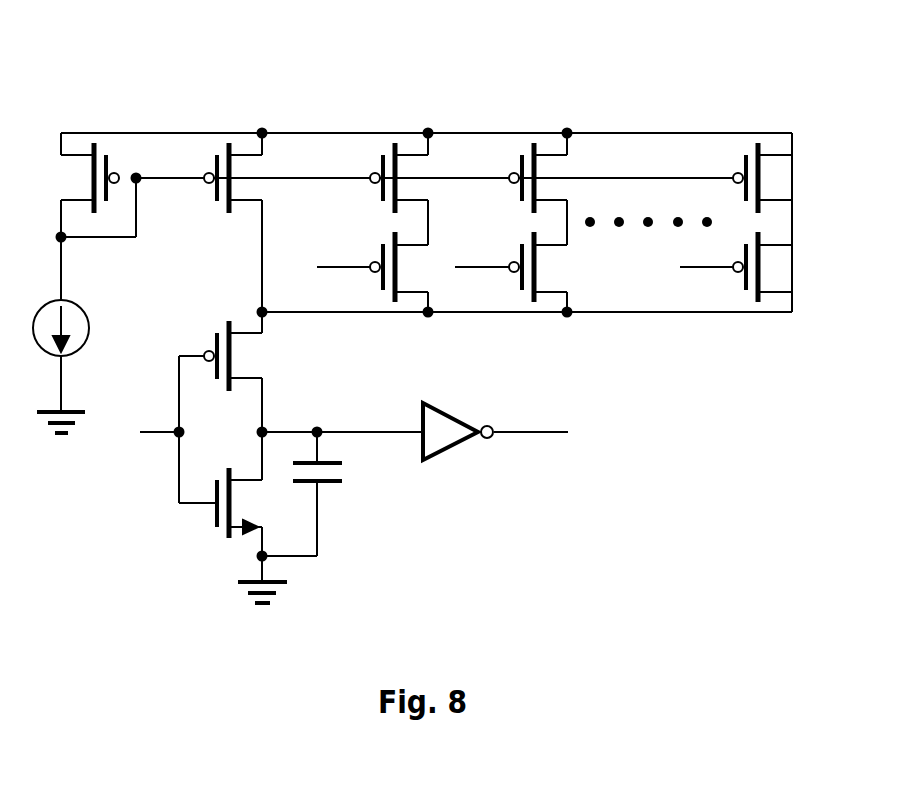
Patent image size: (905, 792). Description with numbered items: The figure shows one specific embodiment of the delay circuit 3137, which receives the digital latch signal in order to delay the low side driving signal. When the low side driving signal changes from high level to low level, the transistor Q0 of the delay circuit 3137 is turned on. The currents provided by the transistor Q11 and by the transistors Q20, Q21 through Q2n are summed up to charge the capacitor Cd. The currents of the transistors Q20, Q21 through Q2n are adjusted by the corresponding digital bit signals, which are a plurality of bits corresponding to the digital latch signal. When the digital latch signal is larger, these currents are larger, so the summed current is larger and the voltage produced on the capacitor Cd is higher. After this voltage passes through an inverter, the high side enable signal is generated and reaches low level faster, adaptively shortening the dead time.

The delay circuit 3137 is at (768, 51).
The transistor Q11 is at (233, 233).
The transistor Q20 is at (357, 222).
The transistor Q21 is at (498, 222).
The transistor Q2n is at (718, 222).
The transistor Q0 is at (220, 451).
The capacitor Cd is at (331, 494).